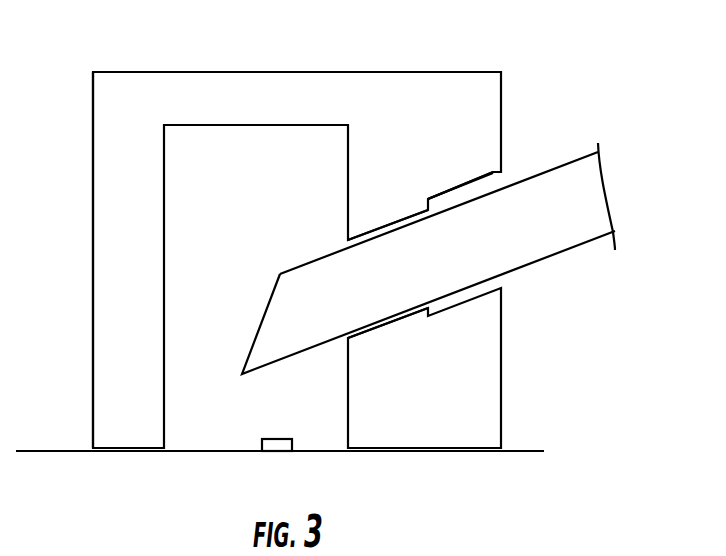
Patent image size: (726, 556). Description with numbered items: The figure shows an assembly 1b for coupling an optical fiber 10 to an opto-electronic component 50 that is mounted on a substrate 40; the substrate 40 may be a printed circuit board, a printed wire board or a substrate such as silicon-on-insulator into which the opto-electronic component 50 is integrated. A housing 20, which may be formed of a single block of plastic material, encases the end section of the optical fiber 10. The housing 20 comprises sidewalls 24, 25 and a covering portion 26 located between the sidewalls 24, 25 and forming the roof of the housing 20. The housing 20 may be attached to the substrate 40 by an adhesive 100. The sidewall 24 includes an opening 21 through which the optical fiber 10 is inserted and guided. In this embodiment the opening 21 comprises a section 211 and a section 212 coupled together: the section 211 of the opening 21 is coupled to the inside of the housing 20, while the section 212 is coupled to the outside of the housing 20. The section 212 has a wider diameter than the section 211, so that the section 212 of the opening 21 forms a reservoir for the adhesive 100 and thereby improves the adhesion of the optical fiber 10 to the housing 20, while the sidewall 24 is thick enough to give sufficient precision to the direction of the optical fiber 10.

The assembly 1b is at (483, 56).
The optical fiber 10 is at (577, 232).
The housing 20 is at (349, 72).
The opening 21 is at (453, 302).
The sidewall 24 is at (470, 432).
The sidewall 25 is at (110, 230).
The covering portion 26 is at (212, 78).
The substrate 40 is at (325, 452).
The opto-electronic component 50 is at (268, 437).
The adhesive 100 is at (497, 182).
The section of the opening 211 is at (388, 225).
The section of the opening 212 is at (455, 200).